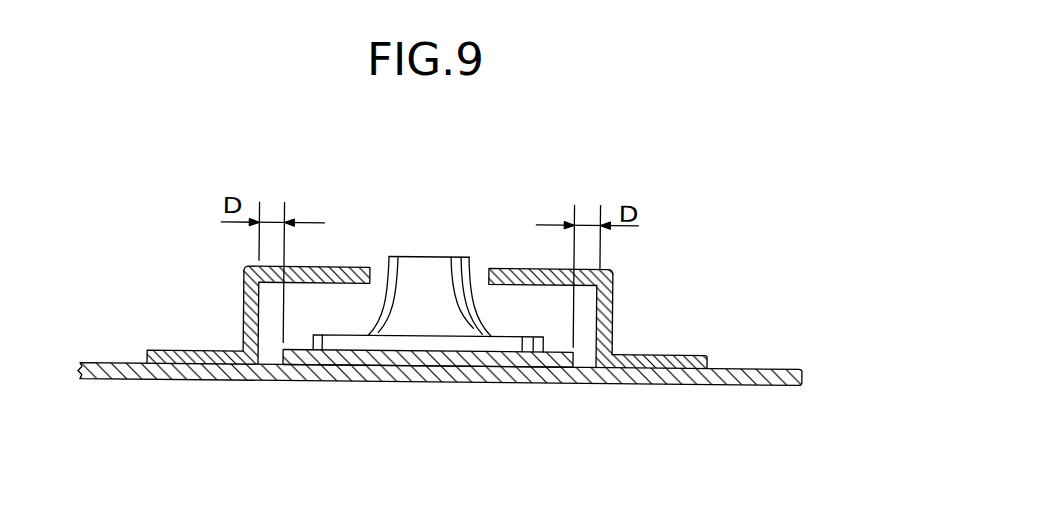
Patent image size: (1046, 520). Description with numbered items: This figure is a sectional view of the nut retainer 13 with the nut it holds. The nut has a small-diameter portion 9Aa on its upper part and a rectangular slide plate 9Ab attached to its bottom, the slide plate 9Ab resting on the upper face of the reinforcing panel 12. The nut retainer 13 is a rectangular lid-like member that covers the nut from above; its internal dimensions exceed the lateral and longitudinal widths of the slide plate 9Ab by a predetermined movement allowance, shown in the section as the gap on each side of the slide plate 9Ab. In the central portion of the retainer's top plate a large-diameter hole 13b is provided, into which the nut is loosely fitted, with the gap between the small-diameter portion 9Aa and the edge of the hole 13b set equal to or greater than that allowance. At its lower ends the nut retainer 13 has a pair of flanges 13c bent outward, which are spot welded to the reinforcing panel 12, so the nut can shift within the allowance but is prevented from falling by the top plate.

The small-diameter portion 9Aa is at (470, 268).
The slide plate 9Ab is at (302, 359).
The reinforcing panel 12 is at (673, 382).
The nut retainer 13 is at (442, 252).
The large-diameter hole 13b is at (370, 270).
The flanges 13c is at (181, 353).